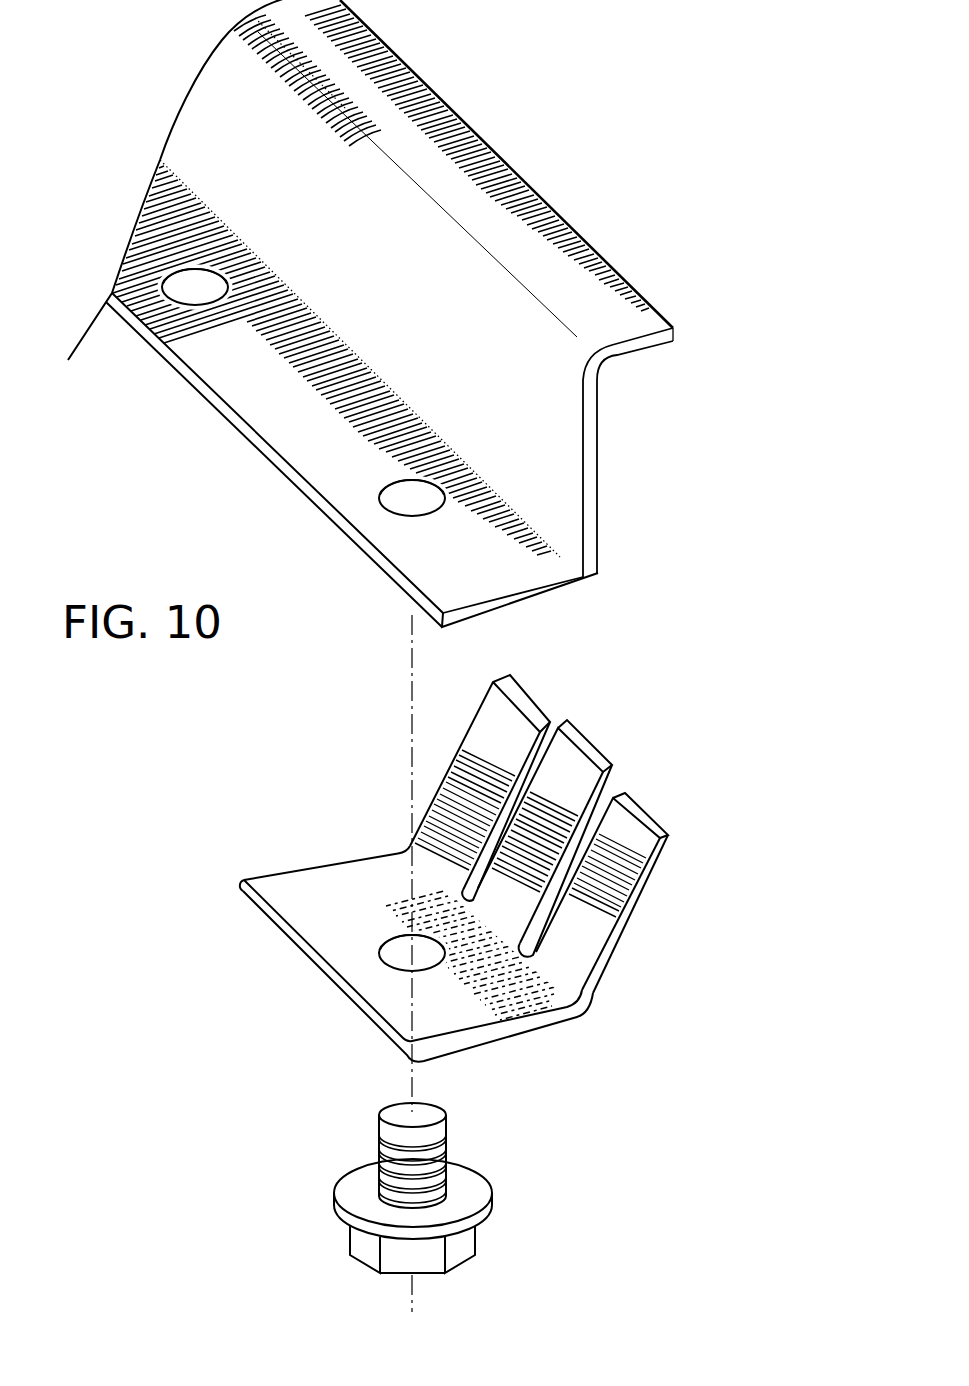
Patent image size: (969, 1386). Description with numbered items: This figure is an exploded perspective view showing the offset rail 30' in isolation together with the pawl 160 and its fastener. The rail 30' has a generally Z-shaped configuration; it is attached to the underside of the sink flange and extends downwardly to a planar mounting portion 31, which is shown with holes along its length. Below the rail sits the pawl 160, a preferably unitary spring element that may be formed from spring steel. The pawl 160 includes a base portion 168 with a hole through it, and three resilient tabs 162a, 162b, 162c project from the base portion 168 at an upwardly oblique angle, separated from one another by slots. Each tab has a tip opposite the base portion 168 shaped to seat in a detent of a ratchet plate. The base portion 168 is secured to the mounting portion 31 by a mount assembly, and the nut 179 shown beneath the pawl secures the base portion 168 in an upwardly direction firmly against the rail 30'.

The rail 30' is at (384, 313).
The planar mounting portion 31 is at (440, 568).
The pawl 160 is at (475, 846).
The resilient tab 162a is at (637, 832).
The resilient tab 162b is at (575, 765).
The resilient tab 162c is at (513, 720).
The base portion 168 is at (298, 893).
The nut 179 is at (362, 1188).